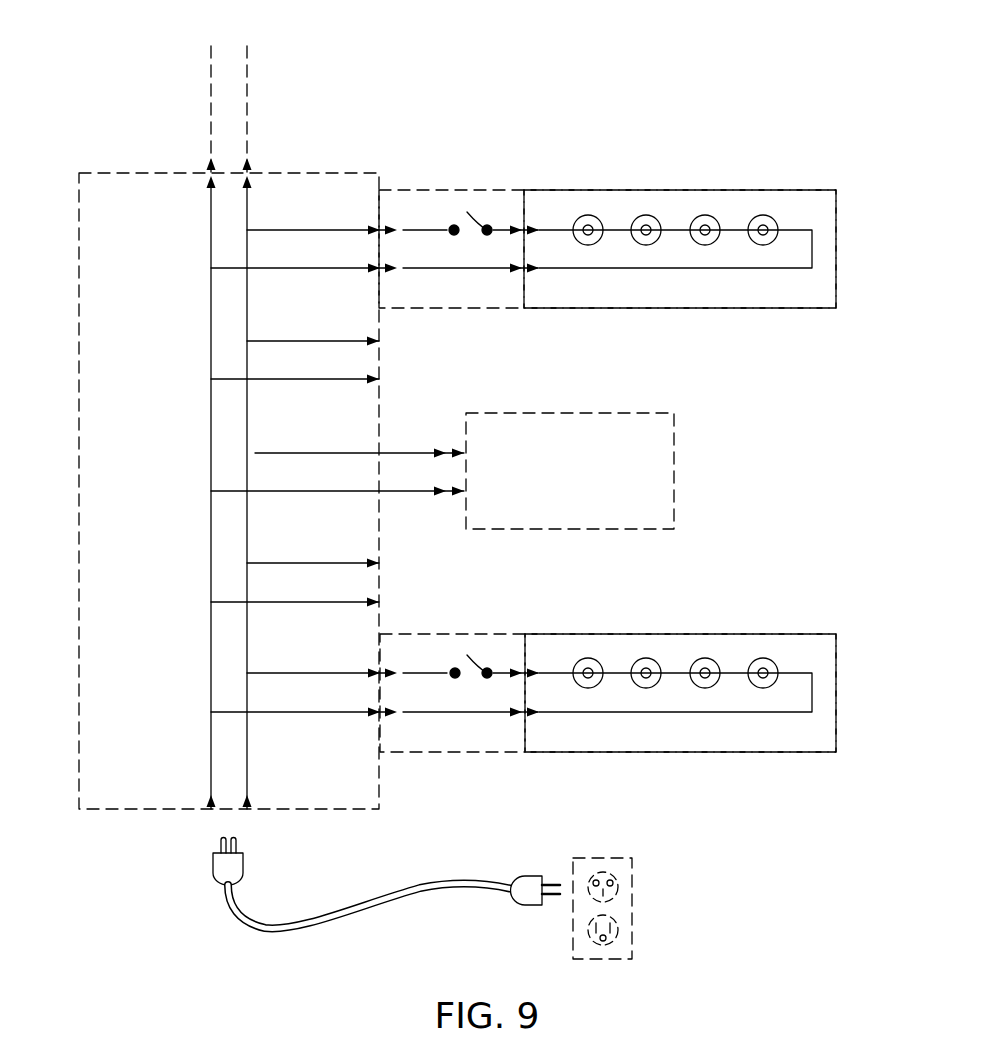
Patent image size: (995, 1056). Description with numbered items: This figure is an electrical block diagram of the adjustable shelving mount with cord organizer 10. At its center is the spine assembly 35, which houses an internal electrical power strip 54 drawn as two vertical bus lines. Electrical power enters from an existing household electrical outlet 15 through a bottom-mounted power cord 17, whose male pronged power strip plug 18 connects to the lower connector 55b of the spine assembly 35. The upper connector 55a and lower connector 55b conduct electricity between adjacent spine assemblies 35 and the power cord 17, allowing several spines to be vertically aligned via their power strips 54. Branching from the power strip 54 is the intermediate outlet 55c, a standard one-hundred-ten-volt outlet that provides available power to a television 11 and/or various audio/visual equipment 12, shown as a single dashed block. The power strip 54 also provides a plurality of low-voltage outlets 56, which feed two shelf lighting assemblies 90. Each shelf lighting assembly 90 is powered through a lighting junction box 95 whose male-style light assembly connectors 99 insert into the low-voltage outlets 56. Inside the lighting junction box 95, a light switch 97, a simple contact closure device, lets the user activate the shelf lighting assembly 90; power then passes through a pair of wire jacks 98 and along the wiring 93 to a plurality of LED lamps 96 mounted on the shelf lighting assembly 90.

The adjustable shelving mount with cord organizer 10 is at (750, 110).
The television 11 is at (617, 471).
The audio/visual equipment 12 is at (674, 476).
The household electrical outlet 15 is at (635, 904).
The power cord 17 is at (312, 928).
The power strip plug 18 is at (245, 869).
The spine assembly 35 is at (100, 173).
The power strip 54 is at (208, 304).
The upper connector 55a is at (208, 162).
The lower connector 55b is at (232, 793).
The intermediate outlet 55c is at (446, 496).
The low-voltage outlet 56 is at (378, 227).
The shelf lighting assembly 90 is at (795, 190).
The wiring 93 is at (700, 270).
The lighting junction box 95 is at (438, 190).
The LED lamps 96 is at (588, 215).
The light switch 97 is at (471, 209).
The wire jacks 98 is at (520, 272).
The light assembly connectors 99 is at (390, 227).